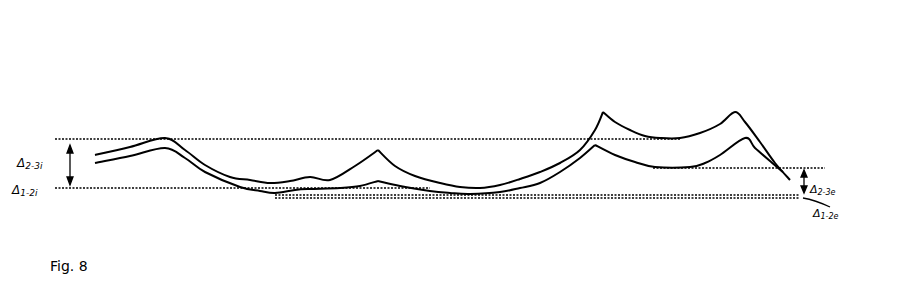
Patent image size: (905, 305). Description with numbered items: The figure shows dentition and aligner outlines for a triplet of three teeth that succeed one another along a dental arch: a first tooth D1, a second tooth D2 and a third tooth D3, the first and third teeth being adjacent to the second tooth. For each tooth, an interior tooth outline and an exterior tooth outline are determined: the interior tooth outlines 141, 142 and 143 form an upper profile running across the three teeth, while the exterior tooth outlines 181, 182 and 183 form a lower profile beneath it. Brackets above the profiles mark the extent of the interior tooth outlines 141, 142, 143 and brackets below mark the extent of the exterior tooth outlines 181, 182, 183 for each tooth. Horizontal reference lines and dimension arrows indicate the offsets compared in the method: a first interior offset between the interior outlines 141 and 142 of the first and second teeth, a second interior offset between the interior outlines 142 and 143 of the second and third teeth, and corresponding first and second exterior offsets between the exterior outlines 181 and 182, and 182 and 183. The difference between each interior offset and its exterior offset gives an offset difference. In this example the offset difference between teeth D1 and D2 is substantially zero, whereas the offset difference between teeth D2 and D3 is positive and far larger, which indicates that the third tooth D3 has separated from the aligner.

The interior tooth outline of the first tooth 141 is at (370, 97).
The interior tooth outline of the second tooth 142 is at (597, 97).
The interior tooth outline of the third tooth 143 is at (737, 97).
The exterior tooth outline of the first tooth 181 is at (370, 223).
The exterior tooth outline of the second tooth 182 is at (597, 223).
The exterior tooth outline of the third tooth 183 is at (737, 223).
The first tooth D1 is at (212, 166).
The second tooth D2 is at (545, 127).
The third tooth D3 is at (708, 118).